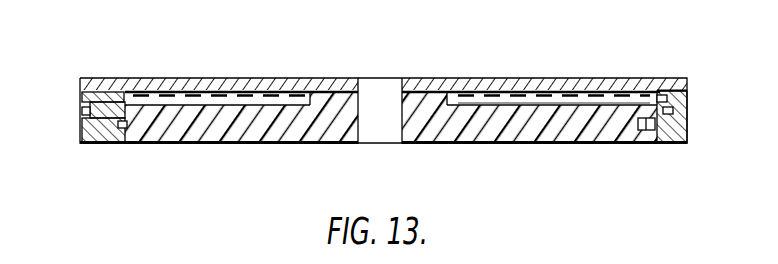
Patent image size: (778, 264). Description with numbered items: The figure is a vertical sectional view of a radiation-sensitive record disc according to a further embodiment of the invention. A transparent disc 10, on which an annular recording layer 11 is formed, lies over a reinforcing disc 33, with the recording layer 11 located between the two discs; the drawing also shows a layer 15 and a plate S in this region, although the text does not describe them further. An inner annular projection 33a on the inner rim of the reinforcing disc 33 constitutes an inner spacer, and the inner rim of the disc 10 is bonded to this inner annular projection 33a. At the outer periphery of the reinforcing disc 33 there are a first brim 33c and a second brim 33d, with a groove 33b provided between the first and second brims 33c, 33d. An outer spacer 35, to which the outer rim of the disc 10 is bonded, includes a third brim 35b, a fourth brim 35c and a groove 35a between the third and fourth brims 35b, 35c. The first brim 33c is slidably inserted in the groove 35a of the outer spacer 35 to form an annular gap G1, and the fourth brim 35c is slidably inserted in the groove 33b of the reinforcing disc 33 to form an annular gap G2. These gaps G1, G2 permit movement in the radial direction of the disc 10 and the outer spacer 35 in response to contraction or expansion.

The transparent disc 10 is at (522, 92).
The annular recording layer 11 is at (482, 92).
The insulating layer 15 is at (552, 103).
The reinforcing disc 33 is at (247, 125).
The inner annular projection 33a is at (440, 99).
The groove 33b is at (130, 119).
The first brim 33c is at (121, 96).
The second brim 33d is at (90, 139).
The outer spacer 35 is at (685, 118).
The groove 35a is at (687, 97).
The third brim 35b is at (662, 93).
The fourth brim 35c is at (653, 133).
The top plate S is at (93, 79).
The annular gap G1 is at (83, 112).
The annular gap G2 is at (126, 128).